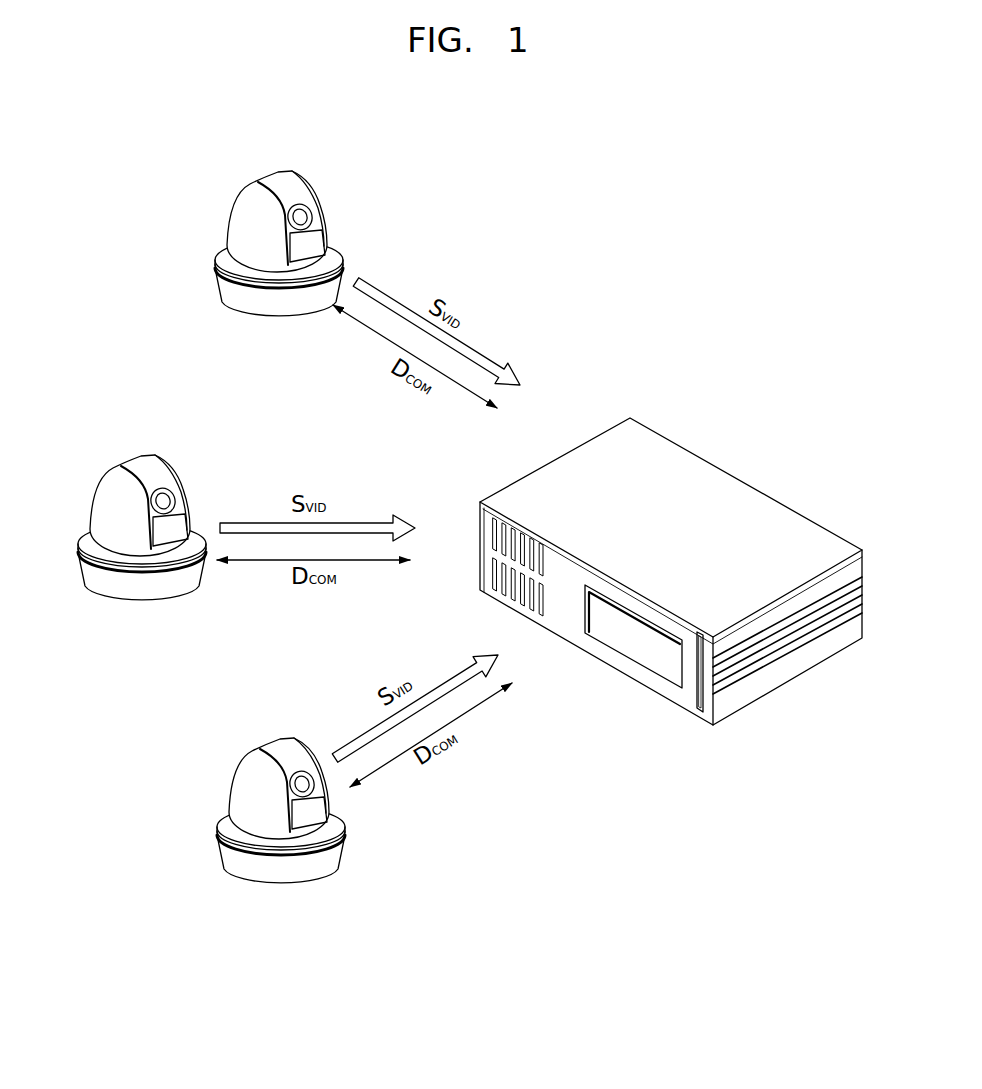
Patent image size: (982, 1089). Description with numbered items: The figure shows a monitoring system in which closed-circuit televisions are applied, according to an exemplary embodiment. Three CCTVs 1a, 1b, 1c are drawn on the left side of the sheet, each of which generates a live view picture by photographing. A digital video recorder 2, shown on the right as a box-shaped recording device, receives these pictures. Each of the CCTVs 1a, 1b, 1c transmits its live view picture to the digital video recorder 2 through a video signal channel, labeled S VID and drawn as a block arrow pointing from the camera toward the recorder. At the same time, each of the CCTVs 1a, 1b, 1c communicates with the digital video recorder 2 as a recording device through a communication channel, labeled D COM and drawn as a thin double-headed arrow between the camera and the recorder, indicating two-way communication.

The closed-circuit television 1a is at (247, 305).
The closed-circuit television 1b is at (113, 592).
The closed-circuit television 1c is at (252, 872).
The digital video recorder 2 is at (692, 478).